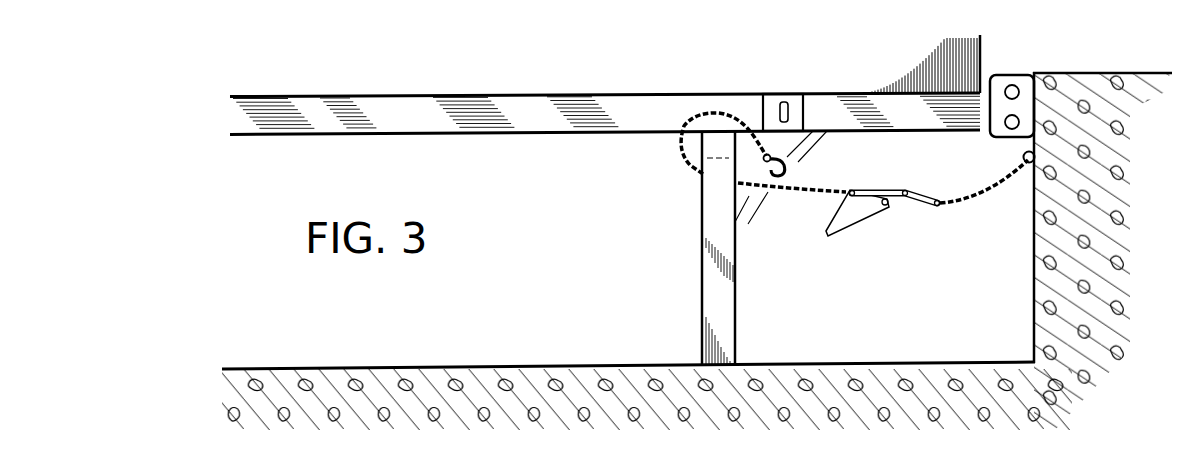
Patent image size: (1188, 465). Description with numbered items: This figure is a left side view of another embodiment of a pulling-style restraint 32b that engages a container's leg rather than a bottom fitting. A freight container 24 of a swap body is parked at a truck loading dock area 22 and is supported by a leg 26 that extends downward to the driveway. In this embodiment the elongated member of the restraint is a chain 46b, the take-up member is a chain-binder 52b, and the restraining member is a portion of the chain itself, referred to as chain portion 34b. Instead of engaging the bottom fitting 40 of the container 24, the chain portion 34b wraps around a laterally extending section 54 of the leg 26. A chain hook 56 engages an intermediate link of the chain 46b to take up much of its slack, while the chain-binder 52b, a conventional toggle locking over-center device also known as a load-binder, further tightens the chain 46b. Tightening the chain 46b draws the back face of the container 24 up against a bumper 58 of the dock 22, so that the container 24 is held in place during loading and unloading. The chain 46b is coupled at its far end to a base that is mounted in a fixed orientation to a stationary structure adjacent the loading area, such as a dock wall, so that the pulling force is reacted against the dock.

The truck loading dock area 22 is at (533, 367).
The freight container 24 is at (547, 134).
The leg 26 is at (702, 258).
The pulling-style restraint 32b is at (885, 243).
The chain portion 34b is at (681, 160).
The bottom fitting 40 is at (806, 106).
The chain 46b is at (800, 195).
The chain-binder 52b is at (853, 223).
The laterally extending section 54 is at (718, 163).
The chain hook 56 is at (813, 172).
The bumper 58 is at (1014, 73).